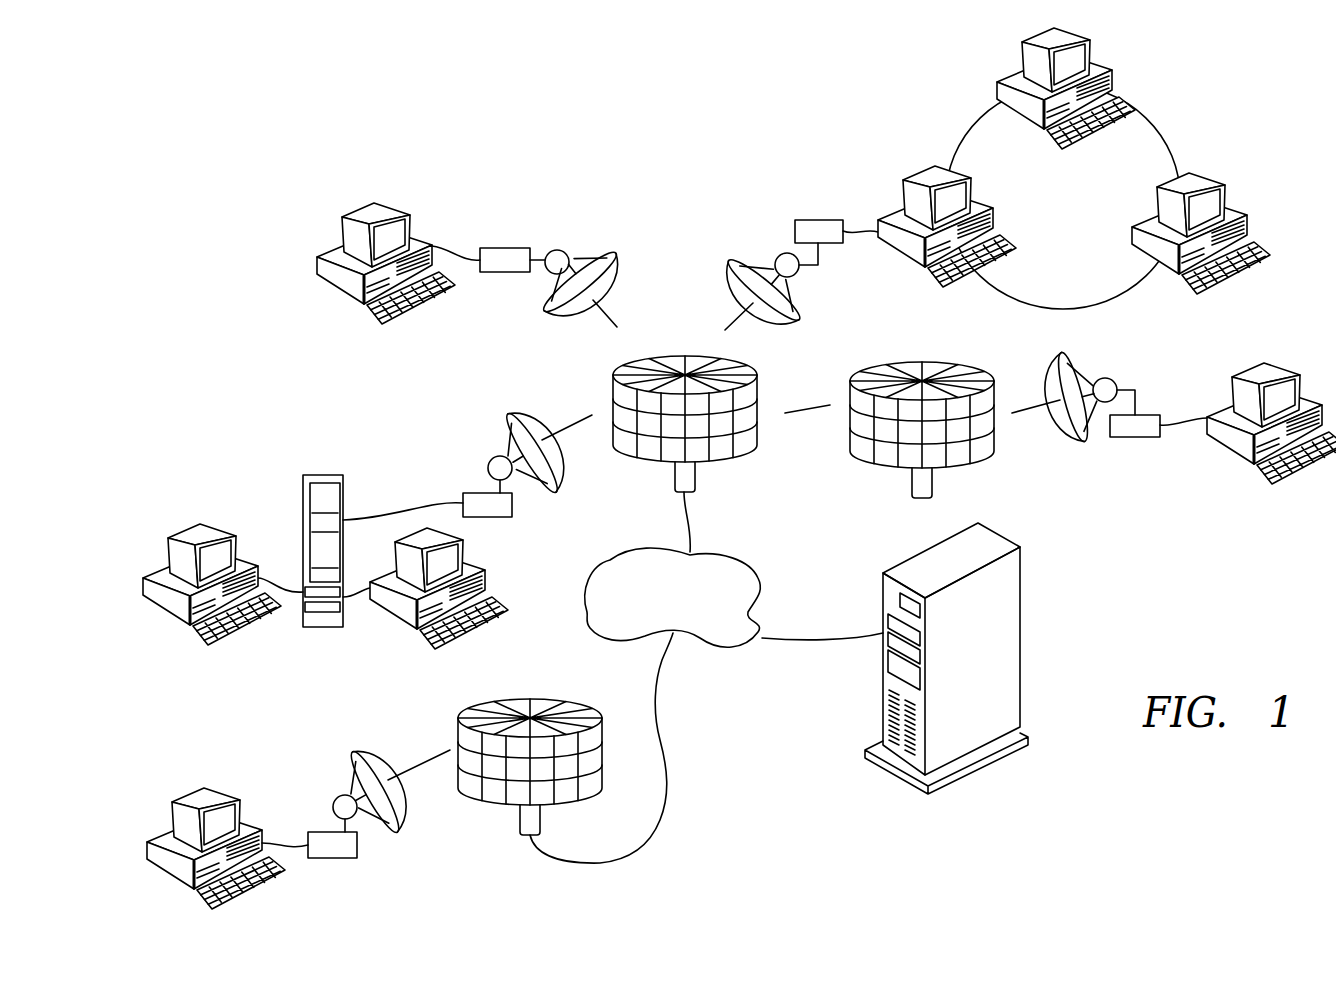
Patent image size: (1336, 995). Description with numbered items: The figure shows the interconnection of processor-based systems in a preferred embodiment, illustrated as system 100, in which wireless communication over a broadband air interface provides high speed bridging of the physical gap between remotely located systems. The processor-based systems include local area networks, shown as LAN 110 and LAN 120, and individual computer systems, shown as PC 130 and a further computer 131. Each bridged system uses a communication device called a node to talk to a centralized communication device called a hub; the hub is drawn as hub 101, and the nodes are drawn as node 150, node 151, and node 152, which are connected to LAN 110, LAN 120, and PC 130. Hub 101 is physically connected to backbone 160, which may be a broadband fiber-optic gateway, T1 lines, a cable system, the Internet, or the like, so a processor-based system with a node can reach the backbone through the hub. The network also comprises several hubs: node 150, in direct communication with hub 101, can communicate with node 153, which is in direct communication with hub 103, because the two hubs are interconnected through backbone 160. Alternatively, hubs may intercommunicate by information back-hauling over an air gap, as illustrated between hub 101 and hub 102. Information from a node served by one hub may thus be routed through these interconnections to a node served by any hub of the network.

The system 100 is at (590, 108).
The hub 101 is at (678, 362).
The hub 102 is at (952, 370).
The hub 103 is at (528, 700).
The LAN 110 is at (310, 462).
The LAN 120 is at (1178, 112).
The PC 130 is at (370, 215).
The computer 131 is at (198, 800).
The node 150 is at (477, 460).
The node 151 is at (765, 238).
The node 152 is at (545, 240).
The node 153 is at (358, 753).
The backbone 160 is at (725, 648).